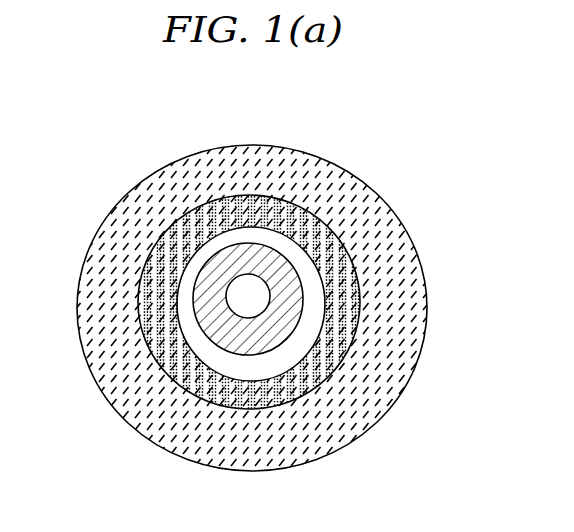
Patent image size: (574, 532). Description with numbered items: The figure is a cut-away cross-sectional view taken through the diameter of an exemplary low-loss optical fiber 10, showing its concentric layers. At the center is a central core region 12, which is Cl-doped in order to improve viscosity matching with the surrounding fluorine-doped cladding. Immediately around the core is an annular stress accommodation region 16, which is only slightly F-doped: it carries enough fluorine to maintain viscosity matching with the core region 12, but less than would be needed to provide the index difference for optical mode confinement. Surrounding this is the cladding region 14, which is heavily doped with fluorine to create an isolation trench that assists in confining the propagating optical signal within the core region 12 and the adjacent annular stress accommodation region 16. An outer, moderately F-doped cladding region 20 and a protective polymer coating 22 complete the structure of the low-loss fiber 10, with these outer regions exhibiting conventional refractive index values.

The low-loss optical fiber 10 is at (271, 275).
The central core region 12 is at (250, 292).
The cladding region 14 is at (314, 290).
The annular stress accommodation region 16 is at (203, 283).
The outer cladding region 20 is at (318, 223).
The protective polymer coating 22 is at (128, 222).